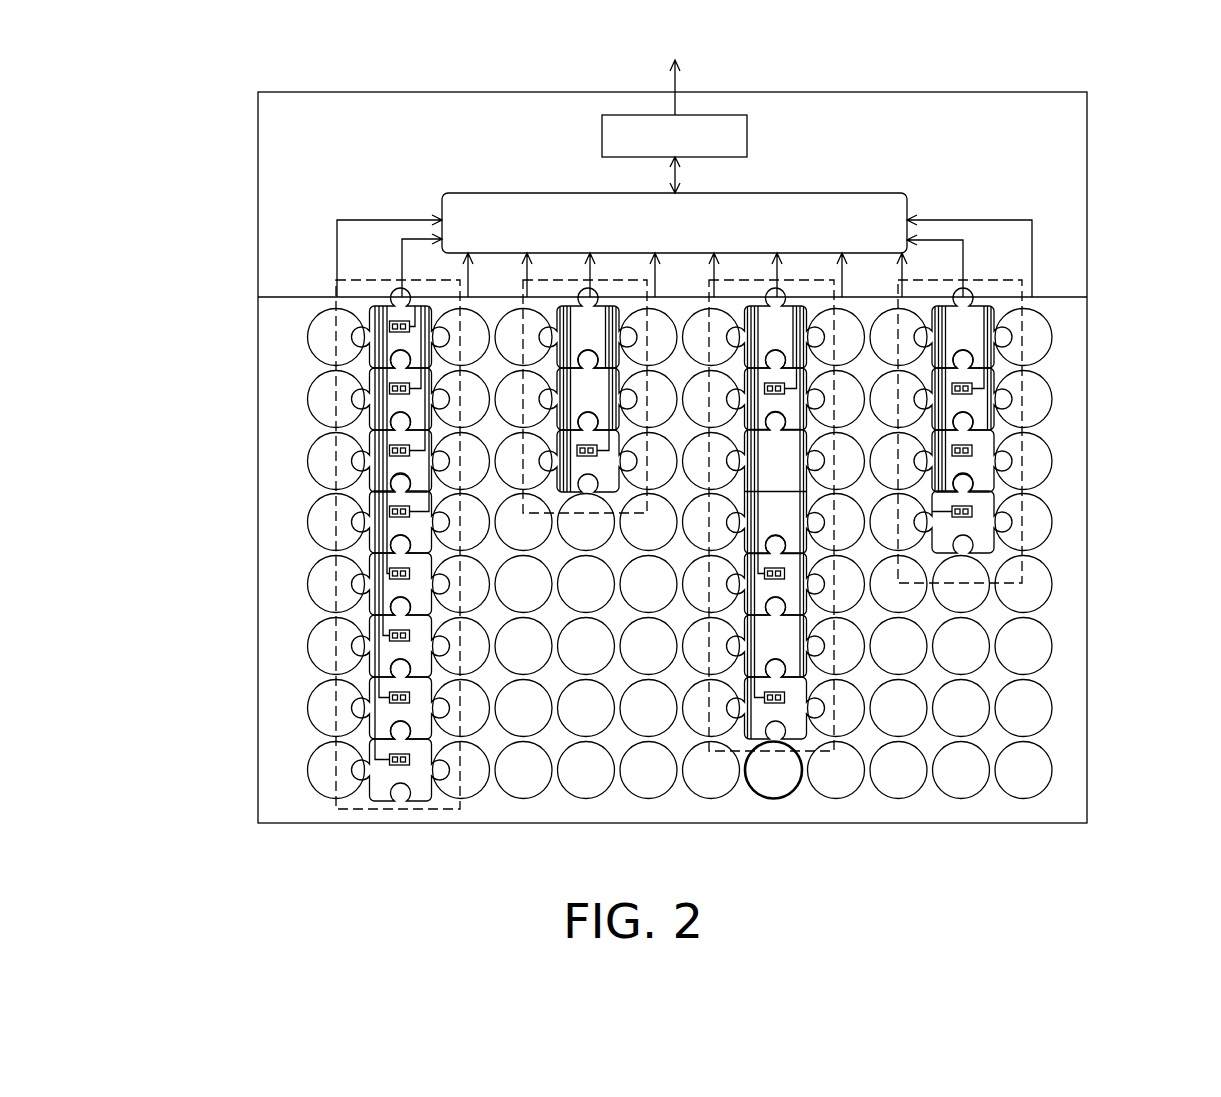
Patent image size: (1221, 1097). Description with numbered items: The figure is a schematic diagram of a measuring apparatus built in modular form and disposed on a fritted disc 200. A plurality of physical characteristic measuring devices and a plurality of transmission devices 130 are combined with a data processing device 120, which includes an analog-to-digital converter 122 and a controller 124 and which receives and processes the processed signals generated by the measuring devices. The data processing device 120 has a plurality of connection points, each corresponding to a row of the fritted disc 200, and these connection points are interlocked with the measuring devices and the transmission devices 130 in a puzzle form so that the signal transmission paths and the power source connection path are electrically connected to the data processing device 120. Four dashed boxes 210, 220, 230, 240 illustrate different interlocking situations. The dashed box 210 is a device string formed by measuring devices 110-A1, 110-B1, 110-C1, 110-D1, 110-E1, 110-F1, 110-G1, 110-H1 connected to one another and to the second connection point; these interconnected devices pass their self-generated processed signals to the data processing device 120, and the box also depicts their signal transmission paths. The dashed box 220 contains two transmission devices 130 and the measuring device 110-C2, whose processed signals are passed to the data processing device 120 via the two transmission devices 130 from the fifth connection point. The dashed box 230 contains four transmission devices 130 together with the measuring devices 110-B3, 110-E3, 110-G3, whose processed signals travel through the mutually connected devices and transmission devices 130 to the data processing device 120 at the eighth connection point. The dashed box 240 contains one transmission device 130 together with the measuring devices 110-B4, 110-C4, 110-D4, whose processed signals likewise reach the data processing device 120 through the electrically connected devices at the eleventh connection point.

The data processing device 120 is at (1087, 158).
The analog-to-digital converter 122 is at (832, 193).
The controller 124 is at (747, 137).
The transmission device 130 is at (610, 318).
The fritted disc 200 is at (1087, 678).
The dashed box 210 is at (406, 825).
The dashed box 220 is at (591, 516).
The dashed box 230 is at (778, 752).
The dashed box 240 is at (962, 586).
The physical characteristic measuring device 110-A1 is at (378, 313).
The physical characteristic measuring device 110-B1 is at (378, 375).
The physical characteristic measuring device 110-C1 is at (378, 437).
The physical characteristic measuring device 110-D1 is at (378, 498).
The physical characteristic measuring device 110-E1 is at (378, 560).
The physical characteristic measuring device 110-F1 is at (378, 622).
The physical characteristic measuring device 110-G1 is at (378, 684).
The physical characteristic measuring device 110-H1 is at (378, 746).
The physical characteristic measuring device 110-C2 is at (608, 480).
The physical characteristic measuring device 110-B3 is at (797, 378).
The physical characteristic measuring device 110-E3 is at (797, 563).
The physical characteristic measuring device 110-G3 is at (797, 684).
The physical characteristic measuring device 110-B4 is at (986, 378).
The physical characteristic measuring device 110-C4 is at (986, 440).
The physical characteristic measuring device 110-D4 is at (986, 500).